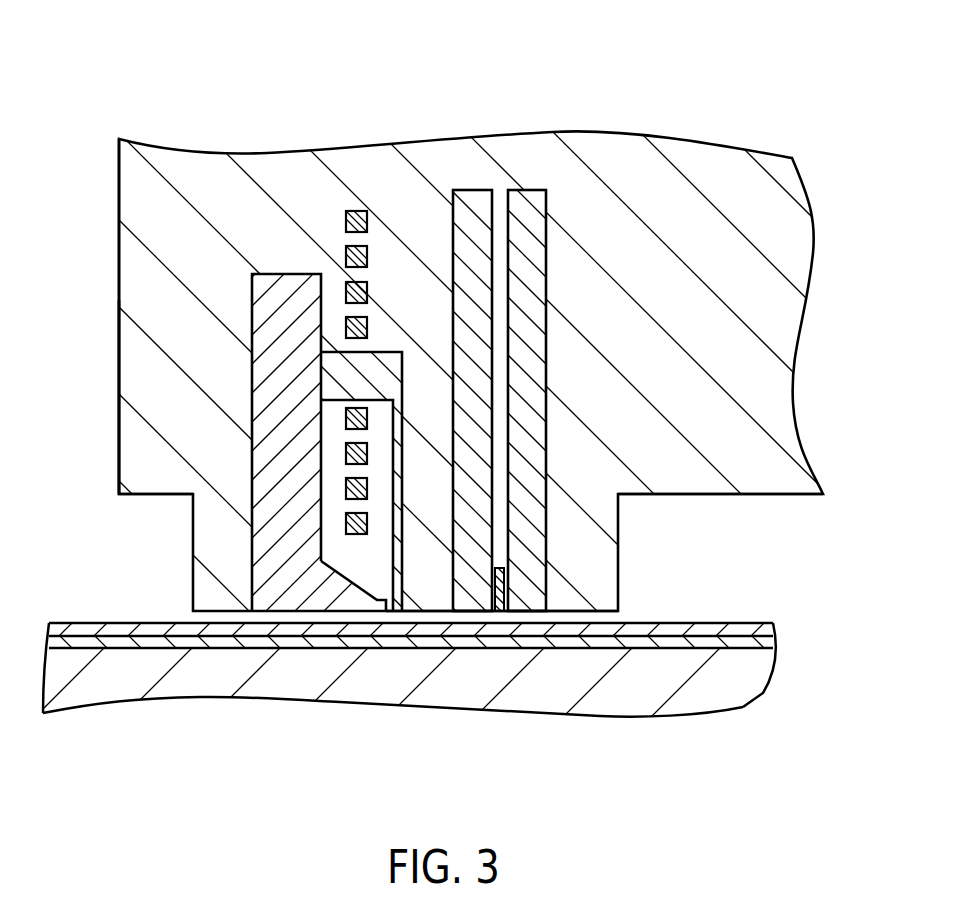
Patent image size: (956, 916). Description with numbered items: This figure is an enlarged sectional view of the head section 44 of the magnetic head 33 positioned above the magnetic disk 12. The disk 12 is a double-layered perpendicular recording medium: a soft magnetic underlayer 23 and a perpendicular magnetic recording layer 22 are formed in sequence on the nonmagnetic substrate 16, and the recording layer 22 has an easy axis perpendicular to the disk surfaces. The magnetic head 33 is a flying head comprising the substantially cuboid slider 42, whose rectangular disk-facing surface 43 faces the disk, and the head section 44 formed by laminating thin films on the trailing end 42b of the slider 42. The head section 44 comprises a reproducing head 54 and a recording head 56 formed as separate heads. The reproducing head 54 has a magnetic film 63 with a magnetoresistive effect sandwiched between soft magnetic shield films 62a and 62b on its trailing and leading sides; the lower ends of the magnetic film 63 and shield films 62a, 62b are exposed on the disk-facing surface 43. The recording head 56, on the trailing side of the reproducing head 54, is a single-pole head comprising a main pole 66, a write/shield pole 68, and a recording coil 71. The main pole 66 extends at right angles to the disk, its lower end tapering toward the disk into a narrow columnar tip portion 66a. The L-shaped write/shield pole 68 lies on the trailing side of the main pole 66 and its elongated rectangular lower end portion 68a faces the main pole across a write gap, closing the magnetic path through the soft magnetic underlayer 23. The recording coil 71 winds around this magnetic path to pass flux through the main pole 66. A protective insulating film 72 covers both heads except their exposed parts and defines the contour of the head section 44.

The magnetic disk 12 is at (745, 735).
The substrate 16 is at (763, 688).
The perpendicular magnetic recording layer 22 is at (730, 627).
The soft magnetic underlayer 23 is at (775, 642).
The magnetic head 33 is at (177, 98).
The slider 42 is at (740, 160).
The trailing end 42b is at (118, 233).
The disk-facing surface (air-bearing surface) 43 is at (763, 495).
The head section 44 is at (393, 155).
The reproducing head 54 is at (560, 191).
The recording head 56 is at (268, 242).
The soft magnetic shield film 62a is at (470, 612).
The soft magnetic shield film 62b is at (533, 605).
The magnetic film 63 is at (500, 603).
The main pole 66 is at (398, 453).
The tip portion 66a is at (418, 612).
The write/shield pole (return pole) 68 is at (260, 410).
The lower end portion 68a is at (333, 612).
The recording coil 71 is at (356, 210).
The protective insulating film 72 is at (132, 343).